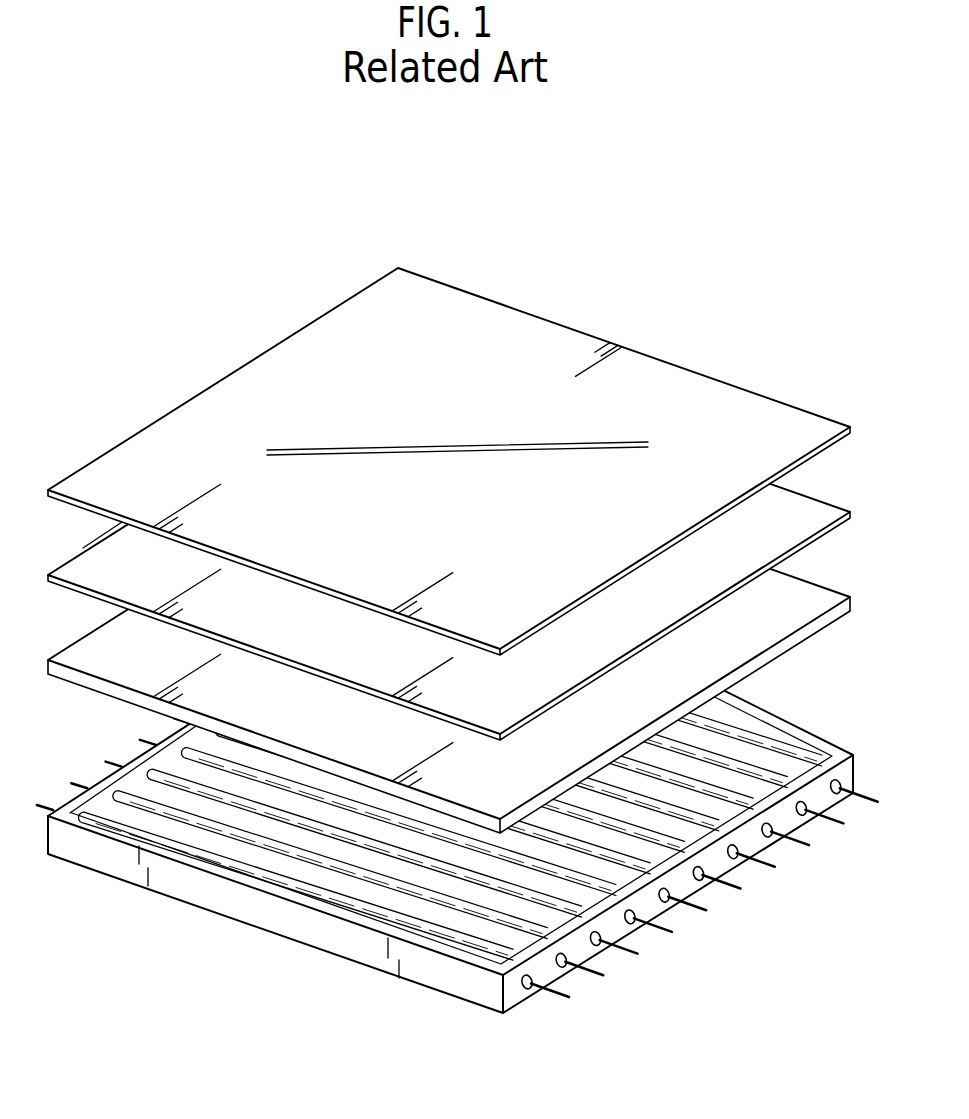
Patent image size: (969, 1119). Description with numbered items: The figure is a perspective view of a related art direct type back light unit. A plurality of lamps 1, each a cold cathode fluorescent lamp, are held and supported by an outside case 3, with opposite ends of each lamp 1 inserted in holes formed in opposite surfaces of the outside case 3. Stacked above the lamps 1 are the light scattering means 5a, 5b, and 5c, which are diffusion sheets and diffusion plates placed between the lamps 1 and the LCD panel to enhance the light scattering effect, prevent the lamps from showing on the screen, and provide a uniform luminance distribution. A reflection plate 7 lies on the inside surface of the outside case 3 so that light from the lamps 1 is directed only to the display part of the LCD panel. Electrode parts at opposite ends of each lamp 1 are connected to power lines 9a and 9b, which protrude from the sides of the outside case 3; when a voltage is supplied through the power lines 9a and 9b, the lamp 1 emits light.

The lamp 1 is at (293, 862).
The outside case 3 is at (480, 990).
The light scattering means 5a is at (798, 593).
The light scattering means 5b is at (798, 507).
The light scattering means 5c is at (798, 420).
The reflection plate 7 is at (400, 885).
The power line 9a is at (42, 805).
The power line 9b is at (562, 998).